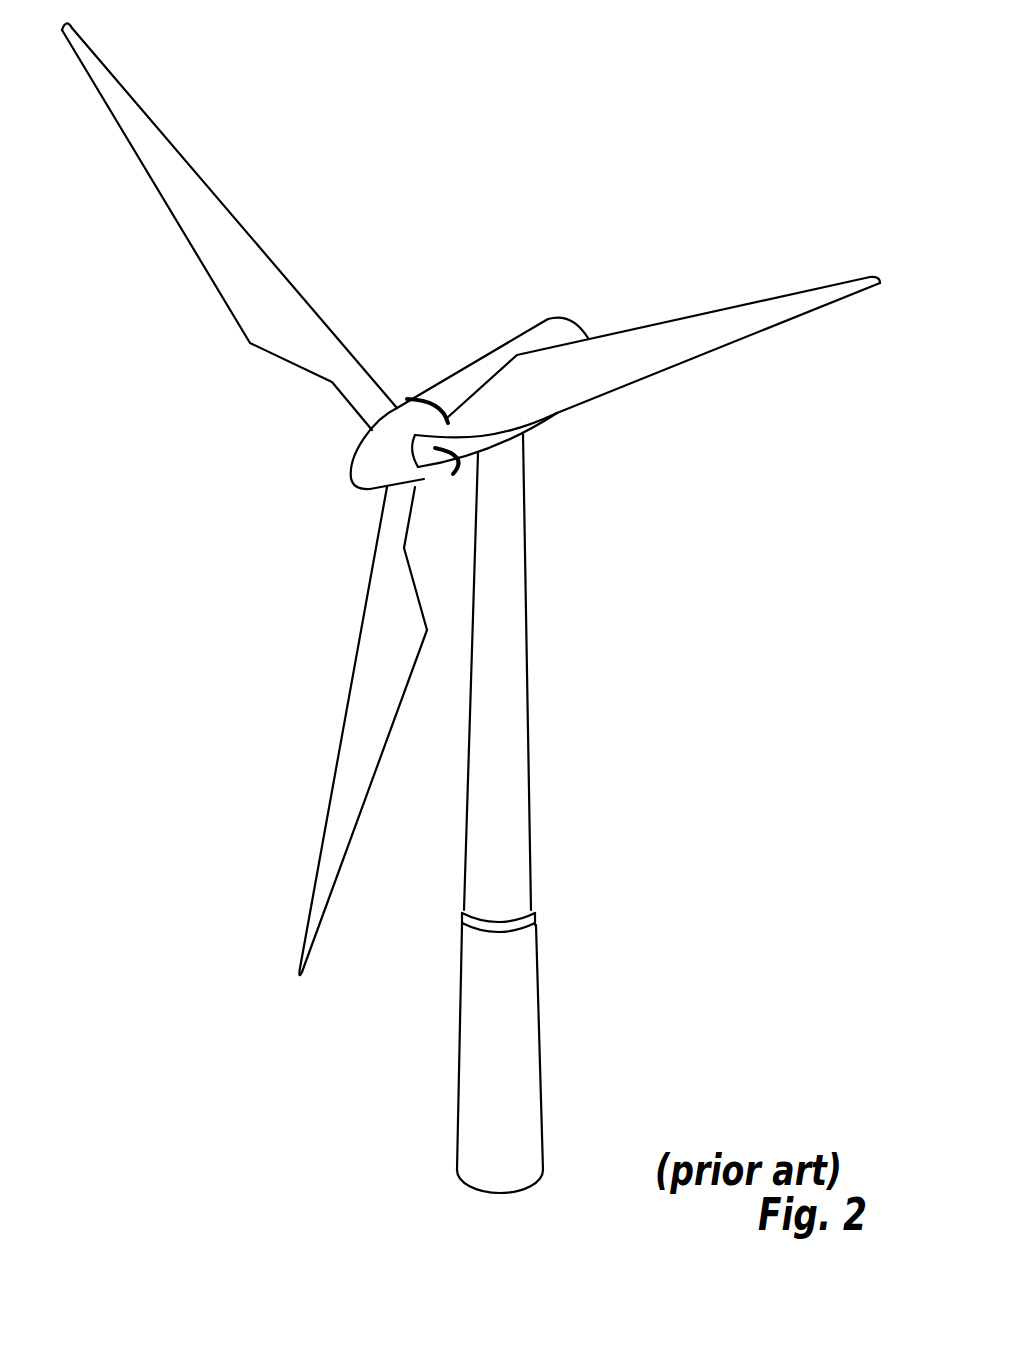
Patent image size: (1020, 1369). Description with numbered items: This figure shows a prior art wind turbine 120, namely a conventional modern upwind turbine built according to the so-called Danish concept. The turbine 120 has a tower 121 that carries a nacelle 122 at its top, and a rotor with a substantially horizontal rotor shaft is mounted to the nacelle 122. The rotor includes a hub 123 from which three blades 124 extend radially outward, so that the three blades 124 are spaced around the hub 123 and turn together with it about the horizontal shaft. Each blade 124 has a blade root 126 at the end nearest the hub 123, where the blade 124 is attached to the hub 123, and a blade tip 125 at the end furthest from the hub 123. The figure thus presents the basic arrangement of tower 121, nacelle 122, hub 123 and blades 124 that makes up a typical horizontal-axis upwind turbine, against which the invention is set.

The wind turbine 120 is at (634, 751).
The tower 121 is at (518, 673).
The nacelle 122 is at (463, 380).
The hub 123 is at (372, 462).
The blade 124 is at (262, 312).
The blade tip 125 is at (107, 74).
The blade root 126 is at (382, 418).